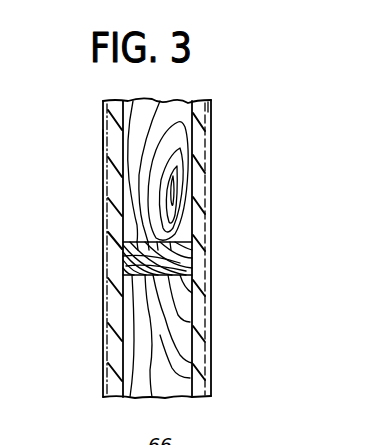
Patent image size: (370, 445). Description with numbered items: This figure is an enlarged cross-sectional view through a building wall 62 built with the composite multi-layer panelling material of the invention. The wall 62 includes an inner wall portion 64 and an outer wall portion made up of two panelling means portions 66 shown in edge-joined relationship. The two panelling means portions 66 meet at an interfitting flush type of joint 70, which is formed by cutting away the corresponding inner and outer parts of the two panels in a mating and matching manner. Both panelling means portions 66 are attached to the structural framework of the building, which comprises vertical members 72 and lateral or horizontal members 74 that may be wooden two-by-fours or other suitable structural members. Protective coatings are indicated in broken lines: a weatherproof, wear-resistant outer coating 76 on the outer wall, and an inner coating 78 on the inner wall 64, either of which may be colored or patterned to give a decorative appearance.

The wall 62 is at (175, 103).
The inner wall portion 64 is at (118, 292).
The panelling means portions 66 is at (219, 342).
The interfitting flush type of joint 70 is at (201, 268).
The vertical members 72 is at (180, 196).
The lateral or horizontal members 74 is at (136, 224).
The outer coating 76 is at (208, 118).
The inner coating 78 is at (103, 140).